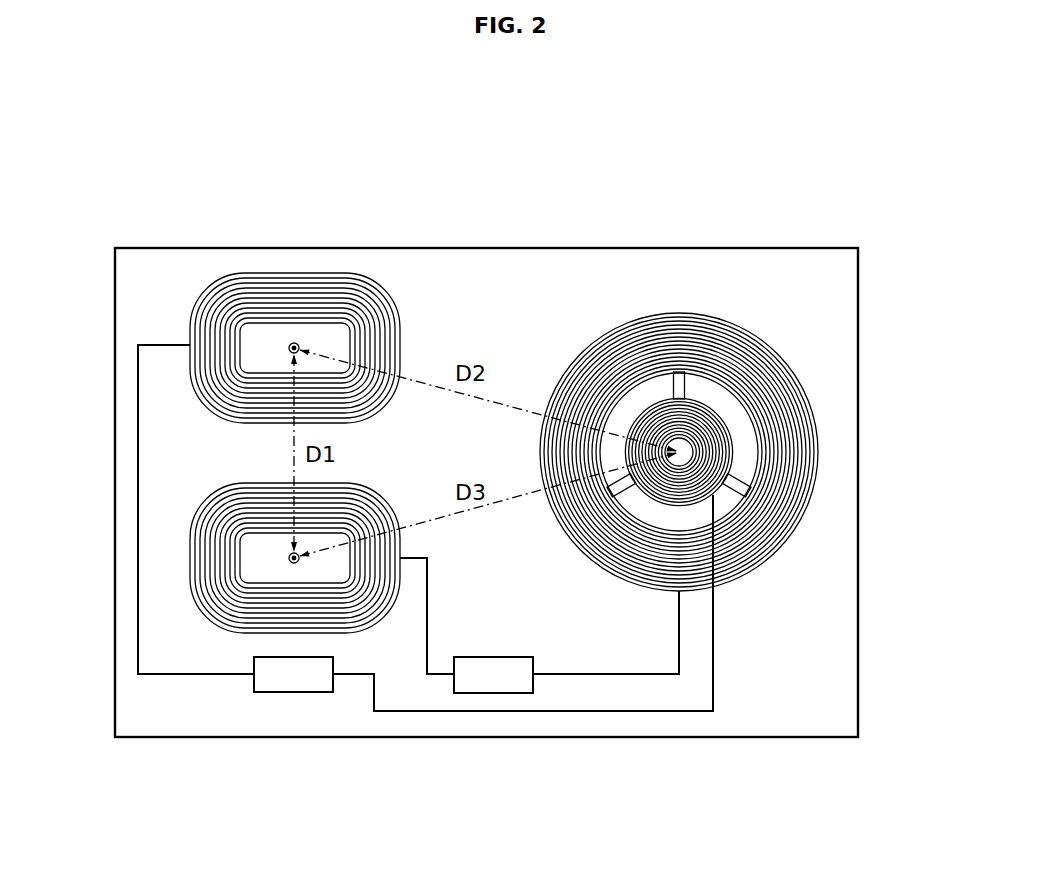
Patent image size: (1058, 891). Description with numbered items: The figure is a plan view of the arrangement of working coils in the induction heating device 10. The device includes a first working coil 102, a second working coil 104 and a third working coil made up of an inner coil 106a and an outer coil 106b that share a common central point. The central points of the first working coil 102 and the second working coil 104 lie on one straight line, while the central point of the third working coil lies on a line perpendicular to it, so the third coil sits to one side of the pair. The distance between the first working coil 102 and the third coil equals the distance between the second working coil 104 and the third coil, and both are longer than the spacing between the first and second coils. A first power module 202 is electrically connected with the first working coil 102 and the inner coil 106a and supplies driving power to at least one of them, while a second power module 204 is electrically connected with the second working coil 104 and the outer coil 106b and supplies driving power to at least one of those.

The induction heating device 10 is at (797, 238).
The first working coil 102 is at (205, 290).
The second working coil 104 is at (205, 500).
The inner coil 106a is at (735, 467).
The outer coil 106b is at (780, 401).
The first power module 202 is at (292, 693).
The second power module 204 is at (493, 694).